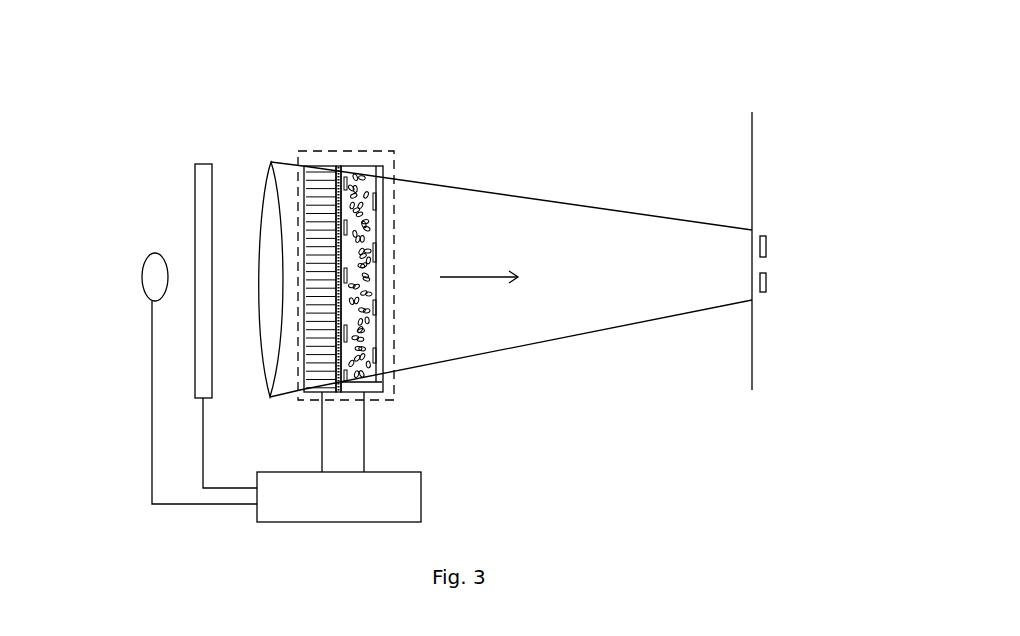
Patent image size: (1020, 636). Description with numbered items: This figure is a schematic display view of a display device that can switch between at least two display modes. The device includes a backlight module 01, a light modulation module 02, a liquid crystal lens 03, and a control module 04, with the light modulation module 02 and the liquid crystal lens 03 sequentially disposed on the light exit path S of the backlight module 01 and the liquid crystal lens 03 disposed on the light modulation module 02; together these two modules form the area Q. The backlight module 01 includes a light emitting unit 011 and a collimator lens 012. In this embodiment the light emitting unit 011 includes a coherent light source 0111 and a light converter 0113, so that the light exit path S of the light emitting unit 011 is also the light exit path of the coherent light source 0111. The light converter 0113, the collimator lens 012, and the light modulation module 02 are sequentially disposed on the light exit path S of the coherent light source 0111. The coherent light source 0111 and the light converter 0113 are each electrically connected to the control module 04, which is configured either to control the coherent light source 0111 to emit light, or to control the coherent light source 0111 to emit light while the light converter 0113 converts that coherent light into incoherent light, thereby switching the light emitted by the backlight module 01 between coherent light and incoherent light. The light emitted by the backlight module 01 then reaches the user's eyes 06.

The backlight module 01 is at (147, 58).
The light emitting unit 011 is at (77, 195).
The coherent light source 0111 is at (140, 267).
The light converter 0113 is at (195, 182).
The collimator lens 012 is at (262, 172).
The light modulation module 02 is at (330, 166).
The liquid crystal lens 03 is at (383, 168).
The control module 04 is at (421, 497).
The user's eyes 06 is at (768, 243).
The area Q is at (404, 389).
The light exit path S is at (501, 275).